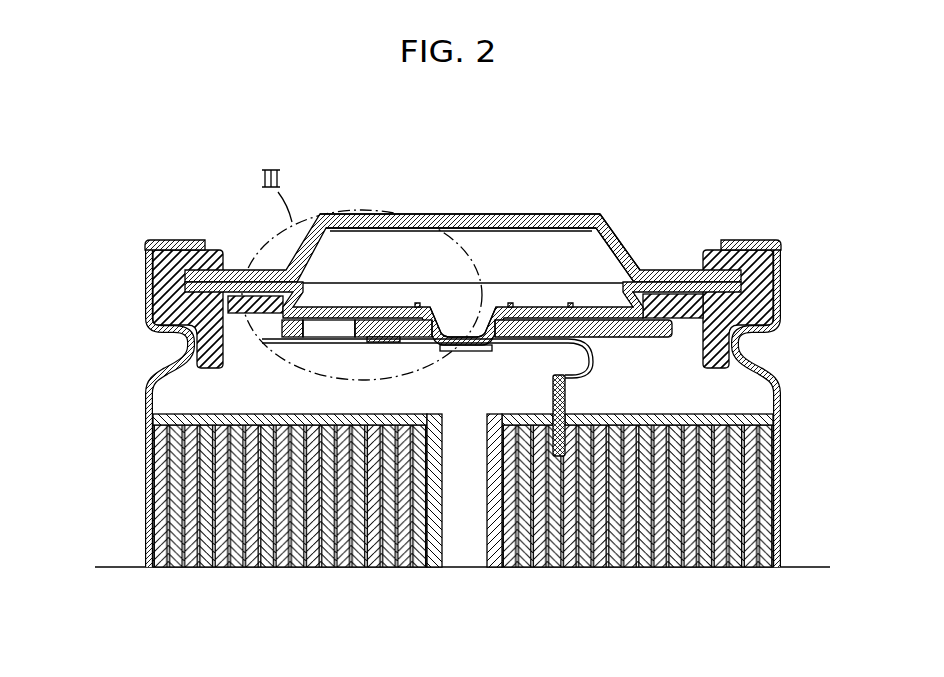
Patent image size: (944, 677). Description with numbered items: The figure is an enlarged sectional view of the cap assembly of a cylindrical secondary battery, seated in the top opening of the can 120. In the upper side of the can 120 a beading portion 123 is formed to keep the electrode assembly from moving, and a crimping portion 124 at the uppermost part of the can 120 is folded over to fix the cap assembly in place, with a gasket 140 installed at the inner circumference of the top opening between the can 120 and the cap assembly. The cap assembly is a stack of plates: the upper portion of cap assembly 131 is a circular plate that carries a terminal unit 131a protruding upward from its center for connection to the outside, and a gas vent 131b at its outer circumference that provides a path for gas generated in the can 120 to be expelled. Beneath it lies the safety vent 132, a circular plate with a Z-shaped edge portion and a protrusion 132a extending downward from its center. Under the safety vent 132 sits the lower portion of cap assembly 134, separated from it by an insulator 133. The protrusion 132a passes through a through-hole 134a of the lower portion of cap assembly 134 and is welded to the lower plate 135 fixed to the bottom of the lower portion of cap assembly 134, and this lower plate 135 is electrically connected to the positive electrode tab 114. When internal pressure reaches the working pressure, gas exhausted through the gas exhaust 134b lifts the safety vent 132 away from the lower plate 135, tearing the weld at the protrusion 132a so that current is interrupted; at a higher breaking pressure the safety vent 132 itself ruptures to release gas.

The positive electrode tab 114 is at (567, 381).
The can 120 is at (137, 465).
The beading portion 123 is at (189, 345).
The crimping portion 124 is at (187, 240).
The upper portion of cap assembly 131 is at (463, 203).
The terminal unit 131a is at (552, 216).
The gas vent 131b is at (631, 222).
The safety vent 132 is at (407, 453).
The protrusion 132a is at (478, 346).
The insulator 133 is at (232, 300).
The lower portion of cap assembly 134 is at (435, 484).
The through-hole 134a is at (491, 344).
The gas exhaust 134b is at (329, 343).
The lower plate 135 is at (396, 344).
The gasket 140 is at (148, 250).